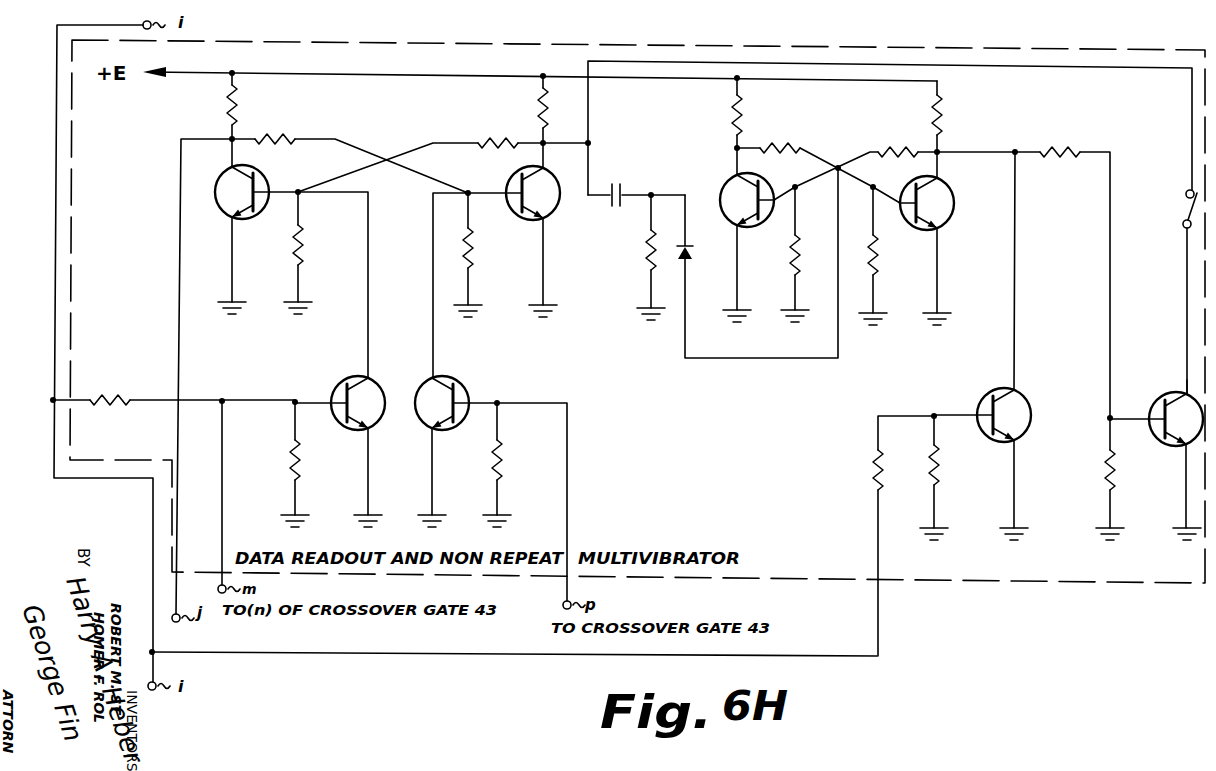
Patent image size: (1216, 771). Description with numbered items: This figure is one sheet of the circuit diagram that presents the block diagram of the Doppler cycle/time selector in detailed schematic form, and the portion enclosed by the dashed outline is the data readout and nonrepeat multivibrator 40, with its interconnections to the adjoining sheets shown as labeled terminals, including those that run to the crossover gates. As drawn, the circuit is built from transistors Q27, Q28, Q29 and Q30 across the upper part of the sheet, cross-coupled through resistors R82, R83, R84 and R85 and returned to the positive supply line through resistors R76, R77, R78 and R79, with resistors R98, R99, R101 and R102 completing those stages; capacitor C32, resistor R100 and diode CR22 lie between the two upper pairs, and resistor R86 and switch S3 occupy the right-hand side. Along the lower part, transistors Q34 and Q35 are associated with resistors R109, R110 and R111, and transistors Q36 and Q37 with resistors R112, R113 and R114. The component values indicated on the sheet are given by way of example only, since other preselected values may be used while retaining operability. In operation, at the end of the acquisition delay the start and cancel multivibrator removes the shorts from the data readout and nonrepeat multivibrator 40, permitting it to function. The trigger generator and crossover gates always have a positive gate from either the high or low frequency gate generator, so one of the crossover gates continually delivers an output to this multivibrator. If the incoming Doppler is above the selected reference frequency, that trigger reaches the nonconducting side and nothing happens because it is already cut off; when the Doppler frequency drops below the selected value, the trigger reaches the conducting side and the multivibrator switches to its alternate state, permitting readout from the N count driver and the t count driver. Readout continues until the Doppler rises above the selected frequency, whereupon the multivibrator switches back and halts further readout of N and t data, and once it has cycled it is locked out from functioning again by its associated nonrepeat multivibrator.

The resistor R76 3.9K R76 is at (205, 107).
The resistor R82 2.7K R82 is at (263, 139).
The transistor Q27 2N377 Q27 is at (258, 220).
The resistor R98 2K R98 is at (315, 247).
The resistor R83 2.7K R83 is at (534, 127).
The resistor R77 3.9K R77 is at (563, 109).
The transistor Q28 2N377 Q28 is at (508, 224).
The resistor R99 2K R99 is at (486, 249).
The capacitor C32 130 PF C32 is at (636, 199).
The resistor R100 7.5K R100 is at (625, 251).
The diode CR22 1N277 CR22 is at (759, 261).
The resistor R78 3.9K R78 is at (714, 114).
The transistor Q29 2N377 Q29 is at (773, 229).
The resistor R84 30K R84 is at (818, 165).
The resistor R101 3.9K R101 is at (816, 248).
The resistor R85 30K R85 is at (907, 150).
The resistor R102 3.9K R102 is at (894, 250).
The resistor R79 3.9K R79 is at (960, 118).
The transistor Q30 2N377 Q30 is at (954, 232).
The resistor R86 20K R86 is at (1023, 272).
The switch S3 is at (1174, 291).
The resistor R109 30K R109 is at (175, 480).
The transistor Q34 2N377 Q34 is at (358, 445).
The resistor R110 3.3K R110 is at (317, 458).
The transistor Q35 2N377 Q35 is at (491, 488).
The resistor R111 3.3K R111 is at (519, 459).
The resistor R112 20K R112 is at (879, 536).
The resistor R113 3.9K R113 is at (956, 470).
The transistor Q36 2N377 Q36 is at (1000, 340).
The transistor Q37 2N377 Q37 is at (1155, 443).
The resistor R114 3.9K R114 is at (1132, 473).
The data readout and nonrepeat multivibrator 40 is at (757, 580).